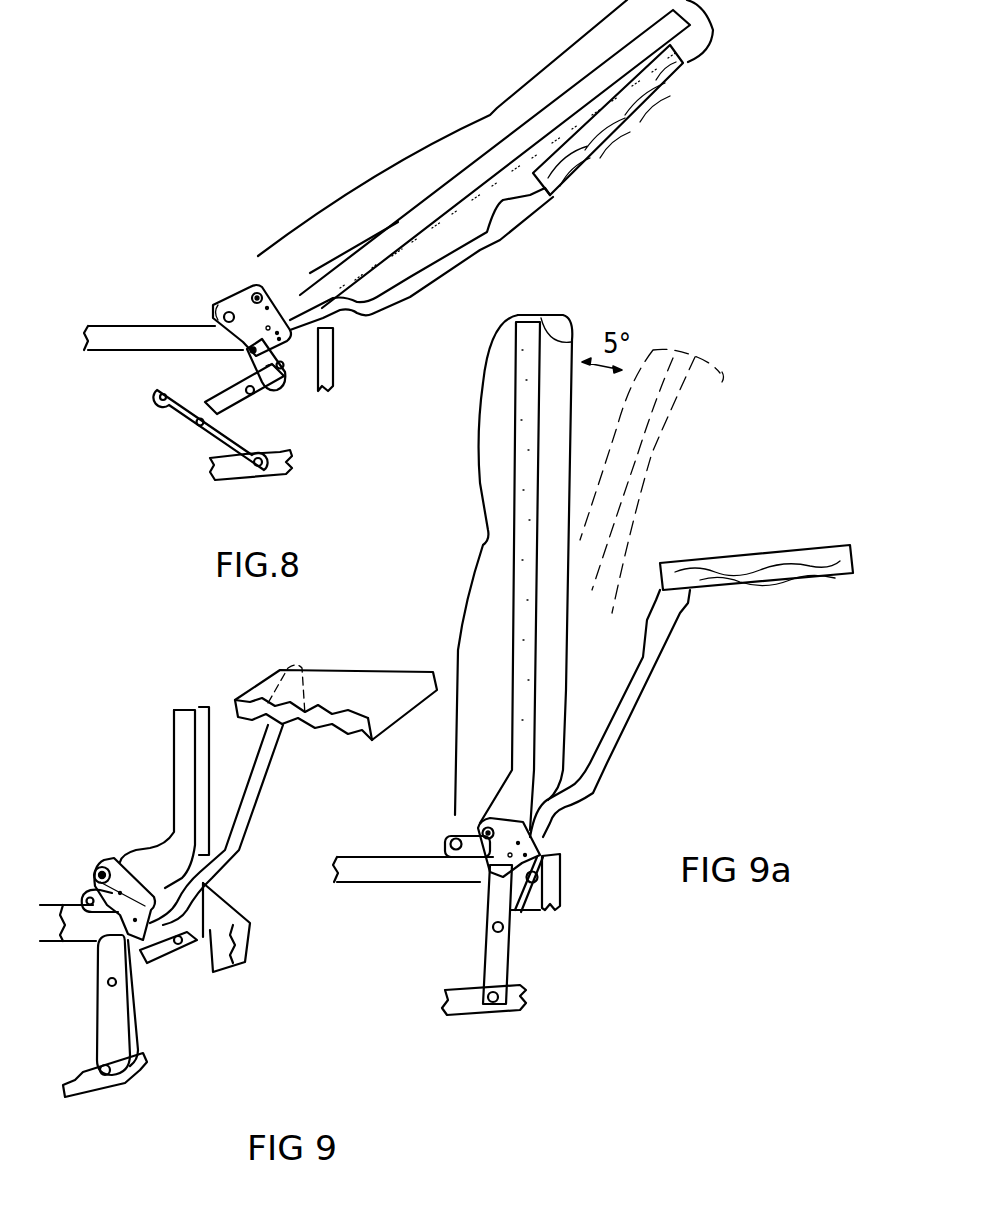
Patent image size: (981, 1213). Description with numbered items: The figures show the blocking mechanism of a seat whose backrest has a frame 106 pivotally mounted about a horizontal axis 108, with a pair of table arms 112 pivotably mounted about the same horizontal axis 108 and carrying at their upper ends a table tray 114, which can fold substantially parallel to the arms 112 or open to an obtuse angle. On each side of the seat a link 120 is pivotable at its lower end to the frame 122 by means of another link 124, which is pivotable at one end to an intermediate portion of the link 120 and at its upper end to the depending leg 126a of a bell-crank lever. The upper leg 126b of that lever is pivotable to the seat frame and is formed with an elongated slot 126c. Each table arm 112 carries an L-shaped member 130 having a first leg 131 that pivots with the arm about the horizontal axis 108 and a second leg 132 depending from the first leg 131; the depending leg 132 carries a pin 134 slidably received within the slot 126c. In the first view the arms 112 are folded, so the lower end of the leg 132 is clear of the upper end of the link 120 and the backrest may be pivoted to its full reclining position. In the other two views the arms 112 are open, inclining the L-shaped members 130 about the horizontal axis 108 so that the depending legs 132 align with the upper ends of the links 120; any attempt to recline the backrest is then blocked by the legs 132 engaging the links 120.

In FIG. 8, the frame 106 is at (550, 116).
In FIG. 9A, the frame 106 is at (522, 527).
In FIG. 9, the frame 106 is at (177, 780).
In FIG. 8, the horizontal axis 108 is at (256, 284).
In FIG. 9A, the horizontal axis 108 is at (480, 824).
In FIG. 9, the horizontal axis 108 is at (100, 867).
In FIG. 8, the table arms 112 is at (500, 230).
In FIG. 9A, the table arms 112 is at (633, 707).
In FIG. 9, the table arms 112 is at (253, 783).
In FIG. 8, the table tray 114 is at (602, 126).
In FIG. 9A, the table tray 114 is at (760, 568).
In FIG. 9, the table tray 114 is at (363, 683).
In FIG. 8, the link 120 is at (183, 410).
In FIG. 9A, the link 120 is at (497, 957).
In FIG. 9, the link 120 is at (110, 1015).
In FIG. 8, the frame 122 is at (215, 466).
In FIG. 9A, the frame 122 is at (455, 1000).
In FIG. 9, the frame 122 is at (65, 1092).
In FIG. 8, the link 124 is at (224, 407).
In FIG. 9A, the link 124 is at (515, 907).
In FIG. 9, the link 124 is at (153, 967).
In FIG. 8, the depending leg 126a is at (272, 380).
In FIG. 9A, the depending leg 126a is at (541, 846).
In FIG. 8, the upper leg 126b is at (217, 308).
In FIG. 9A, the upper leg 126b is at (456, 838).
In FIG. 9, the upper leg 126b is at (92, 914).
In FIG. 8, the elongated slot 126c is at (283, 363).
In FIG. 8, the L-shaped member 130 is at (297, 280).
In FIG. 8, the first leg 131 is at (266, 307).
In FIG. 9A, the first leg 131 is at (488, 828).
In FIG. 9, the first leg 131 is at (97, 863).
In FIG. 8, the second leg 132 is at (286, 342).
In FIG. 9A, the second leg 132 is at (495, 863).
In FIG. 9, the second leg 132 is at (92, 990).
In FIG. 8, the pin 134 is at (252, 352).